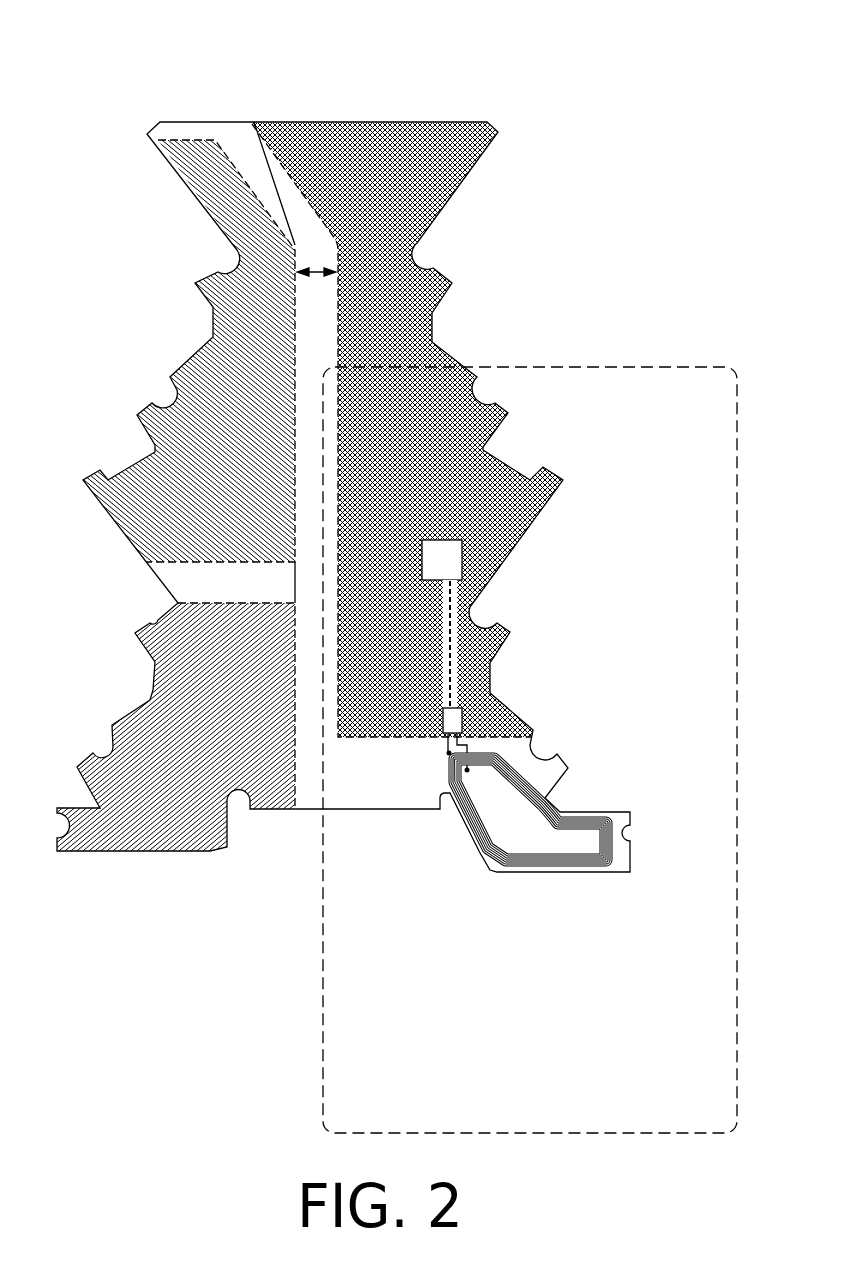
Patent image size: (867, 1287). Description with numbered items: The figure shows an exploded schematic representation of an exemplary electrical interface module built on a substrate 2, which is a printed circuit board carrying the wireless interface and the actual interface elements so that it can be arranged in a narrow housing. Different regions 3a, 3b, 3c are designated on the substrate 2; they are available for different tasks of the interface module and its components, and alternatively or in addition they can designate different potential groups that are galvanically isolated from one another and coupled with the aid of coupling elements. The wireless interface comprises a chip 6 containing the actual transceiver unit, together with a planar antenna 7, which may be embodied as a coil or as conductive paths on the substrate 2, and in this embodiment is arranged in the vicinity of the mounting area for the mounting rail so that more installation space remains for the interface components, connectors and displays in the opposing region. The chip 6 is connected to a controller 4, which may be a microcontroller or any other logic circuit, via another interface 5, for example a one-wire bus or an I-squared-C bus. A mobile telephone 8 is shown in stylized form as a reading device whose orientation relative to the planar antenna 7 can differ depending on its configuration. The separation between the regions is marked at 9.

The substrate 2 is at (220, 121).
The region 3a is at (213, 363).
The region 3b is at (433, 133).
The region 3c is at (173, 720).
The controller 4 is at (443, 564).
The interface 5 is at (450, 642).
The chip 6 is at (453, 720).
The planar antenna 7 is at (543, 864).
The mobile telephone 8 is at (611, 362).
The gap 9 is at (319, 270).